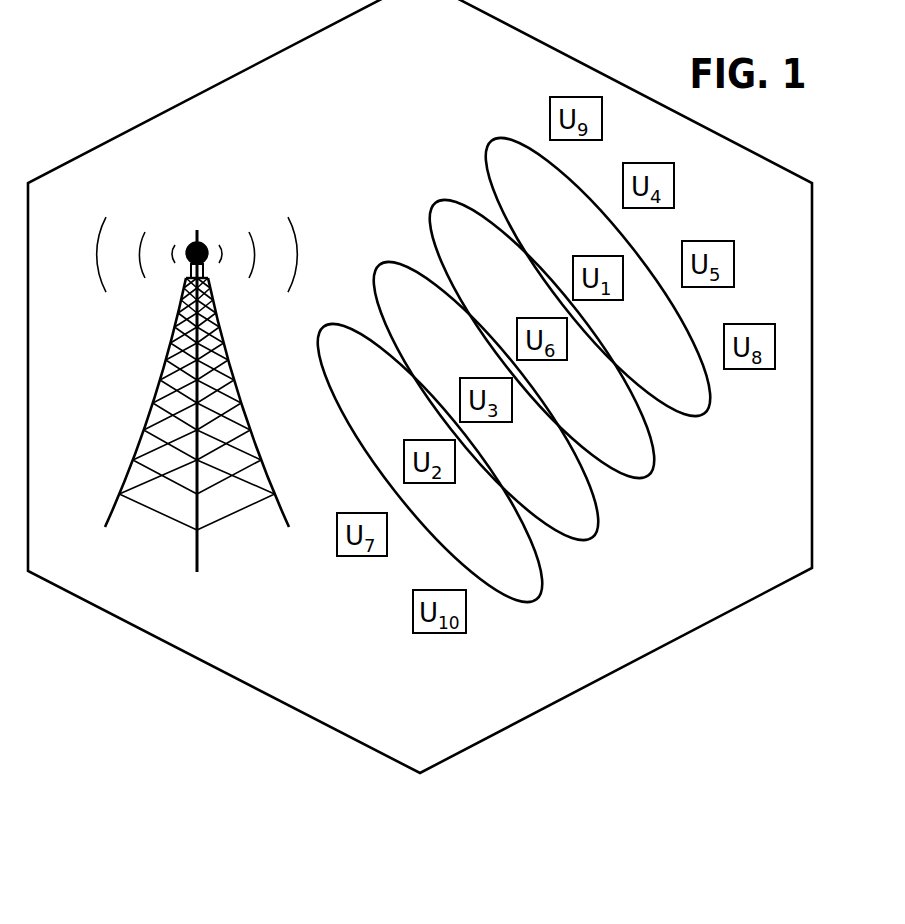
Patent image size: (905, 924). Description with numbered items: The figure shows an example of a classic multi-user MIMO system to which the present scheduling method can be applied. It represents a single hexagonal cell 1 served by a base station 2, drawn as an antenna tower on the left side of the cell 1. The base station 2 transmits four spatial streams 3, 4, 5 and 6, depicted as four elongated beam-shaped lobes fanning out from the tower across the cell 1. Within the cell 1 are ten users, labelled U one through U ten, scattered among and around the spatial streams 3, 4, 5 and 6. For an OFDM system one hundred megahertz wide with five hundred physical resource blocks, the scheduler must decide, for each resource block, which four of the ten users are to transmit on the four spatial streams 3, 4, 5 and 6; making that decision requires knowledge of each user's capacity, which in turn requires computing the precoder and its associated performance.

The cell 1 is at (660, 647).
The base station 2 is at (197, 412).
The spatial stream 3 is at (430, 463).
The spatial stream 4 is at (486, 401).
The spatial stream 5 is at (542, 339).
The spatial stream 6 is at (598, 277).